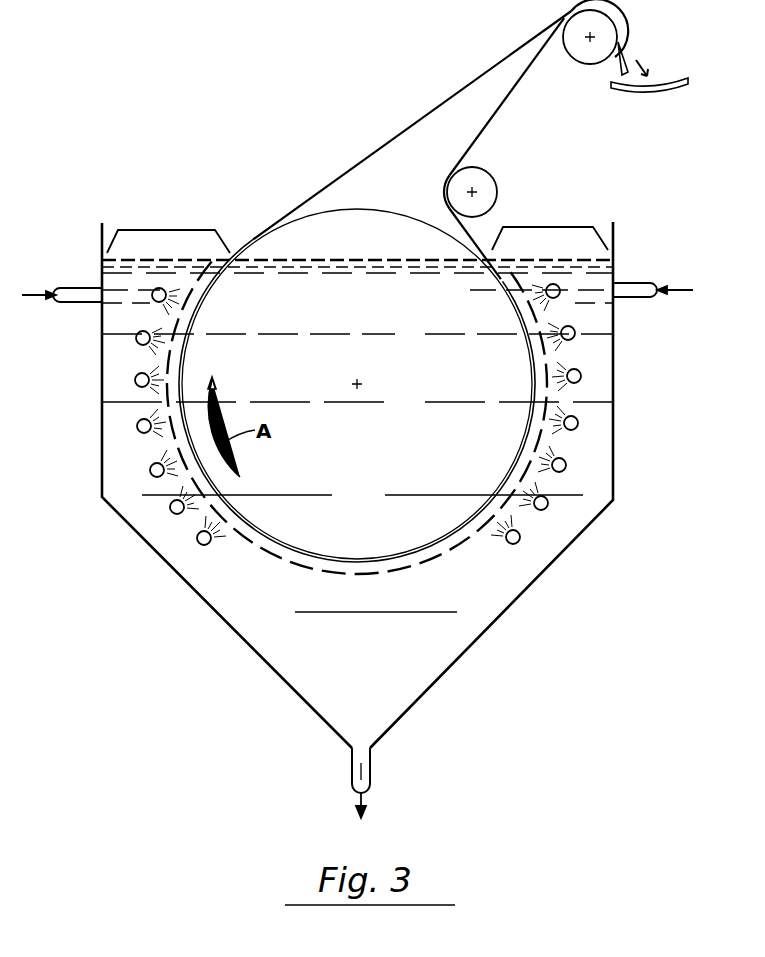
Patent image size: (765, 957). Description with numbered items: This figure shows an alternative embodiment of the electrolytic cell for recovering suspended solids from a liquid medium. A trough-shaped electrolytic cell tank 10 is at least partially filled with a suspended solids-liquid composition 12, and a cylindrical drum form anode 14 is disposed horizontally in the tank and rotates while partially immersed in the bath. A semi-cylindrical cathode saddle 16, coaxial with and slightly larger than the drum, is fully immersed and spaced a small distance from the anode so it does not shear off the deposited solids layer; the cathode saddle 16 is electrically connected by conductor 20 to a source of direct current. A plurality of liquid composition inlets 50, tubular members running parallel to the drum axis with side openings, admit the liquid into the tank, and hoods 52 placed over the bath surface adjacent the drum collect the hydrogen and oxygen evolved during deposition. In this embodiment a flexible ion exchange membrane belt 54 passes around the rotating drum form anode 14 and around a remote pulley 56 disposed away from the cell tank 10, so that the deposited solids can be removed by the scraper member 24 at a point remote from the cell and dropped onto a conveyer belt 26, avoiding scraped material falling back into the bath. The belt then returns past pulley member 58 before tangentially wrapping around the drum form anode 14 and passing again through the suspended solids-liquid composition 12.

The electrolytic cell tank 10 is at (570, 543).
The suspended solids-liquid composition 12 is at (412, 653).
The drum form anode 14 is at (487, 417).
The cathode saddle 16 is at (277, 560).
The conductor wire 20 is at (372, 766).
The scraper member 24 is at (625, 58).
The conveyer belt 26 is at (668, 101).
The liquid composition inlets 50 is at (85, 304).
The hoods 52 is at (170, 230).
The ion exchange membrane belt 54 is at (437, 108).
The remote pulley 56 is at (565, 40).
The pulley member 58 is at (497, 178).